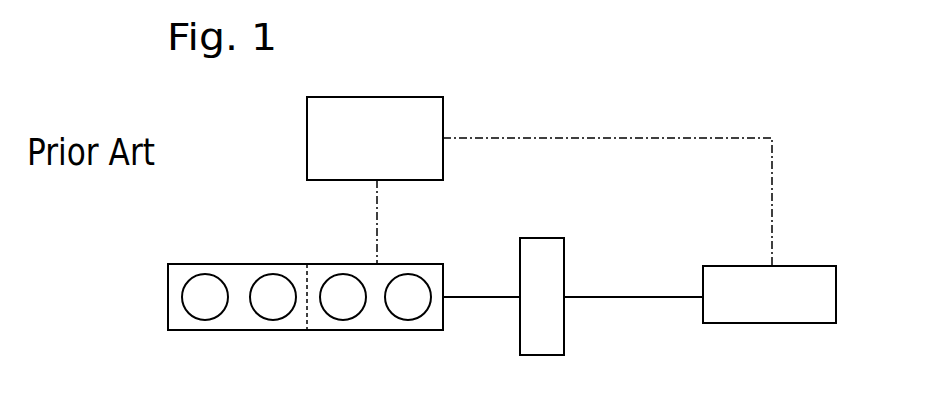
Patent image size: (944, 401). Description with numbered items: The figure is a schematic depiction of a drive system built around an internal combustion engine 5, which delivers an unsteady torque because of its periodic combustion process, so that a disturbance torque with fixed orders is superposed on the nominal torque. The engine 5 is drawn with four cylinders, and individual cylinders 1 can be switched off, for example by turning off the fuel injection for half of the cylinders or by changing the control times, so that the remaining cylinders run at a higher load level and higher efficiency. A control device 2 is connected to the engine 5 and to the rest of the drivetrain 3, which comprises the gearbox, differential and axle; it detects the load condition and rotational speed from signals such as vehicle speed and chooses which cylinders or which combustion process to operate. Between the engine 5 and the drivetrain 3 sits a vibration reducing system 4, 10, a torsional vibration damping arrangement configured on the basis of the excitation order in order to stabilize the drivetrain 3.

The cylinders 1 is at (306, 331).
The control device 2 is at (411, 120).
The drivetrain 3 is at (809, 282).
The vibration reducing system 4 is at (553, 334).
The internal combustion engine 5 is at (272, 264).
The clutch 10 is at (542, 296).